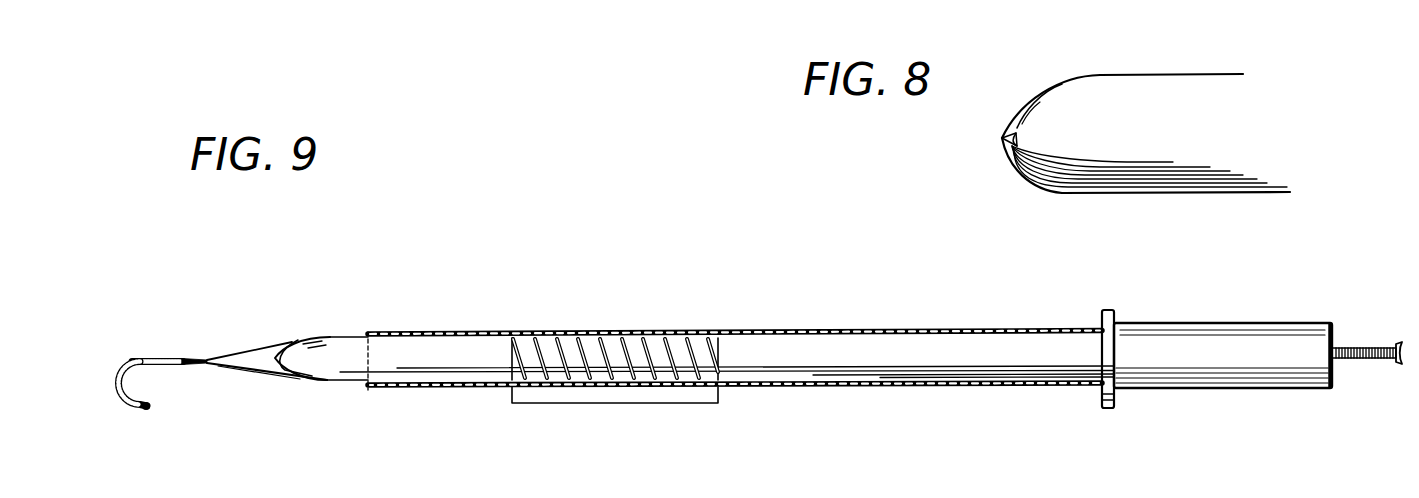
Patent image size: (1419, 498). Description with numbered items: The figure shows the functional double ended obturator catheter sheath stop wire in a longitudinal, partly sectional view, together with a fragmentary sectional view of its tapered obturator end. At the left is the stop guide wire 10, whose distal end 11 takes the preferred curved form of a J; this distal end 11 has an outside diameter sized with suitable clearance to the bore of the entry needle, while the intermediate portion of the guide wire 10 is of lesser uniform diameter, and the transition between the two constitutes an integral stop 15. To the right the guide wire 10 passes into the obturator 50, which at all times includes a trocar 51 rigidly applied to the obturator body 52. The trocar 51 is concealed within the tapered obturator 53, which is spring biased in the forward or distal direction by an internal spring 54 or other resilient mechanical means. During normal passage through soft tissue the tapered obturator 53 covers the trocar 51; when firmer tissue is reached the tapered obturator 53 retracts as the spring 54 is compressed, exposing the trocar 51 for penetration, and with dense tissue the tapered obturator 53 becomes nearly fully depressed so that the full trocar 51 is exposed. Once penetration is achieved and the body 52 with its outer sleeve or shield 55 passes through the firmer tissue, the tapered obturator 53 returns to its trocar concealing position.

The guide wire 10 is at (132, 351).
The distal end 11 is at (116, 384).
The stop 15 is at (183, 356).
The obturator 50 is at (761, 362).
The trocar 51 is at (253, 356).
The obturator body 52 is at (827, 348).
The tapered obturator 53 is at (330, 360).
The internal spring 54 is at (634, 354).
The outer sleeve or shield 55 is at (990, 330).